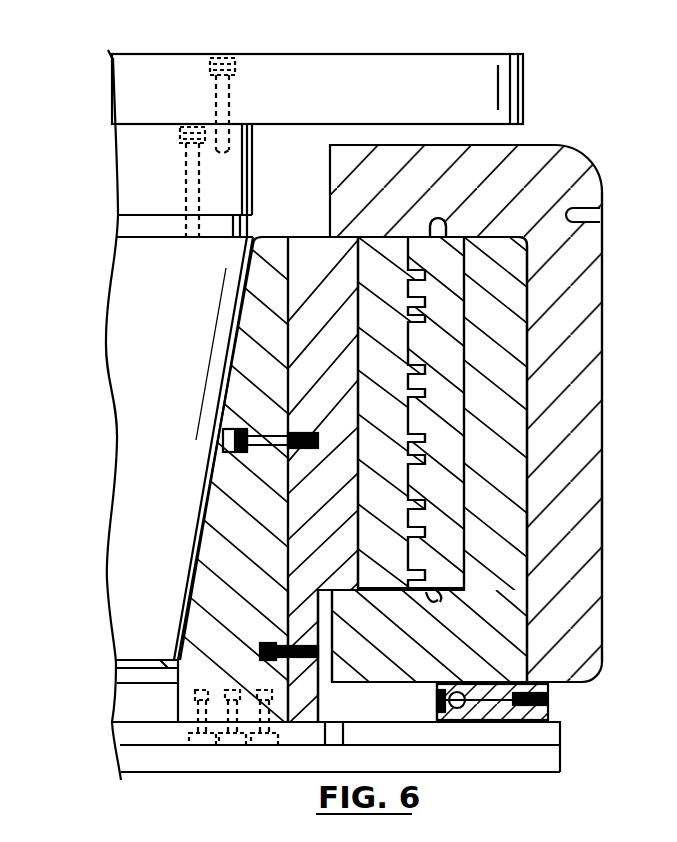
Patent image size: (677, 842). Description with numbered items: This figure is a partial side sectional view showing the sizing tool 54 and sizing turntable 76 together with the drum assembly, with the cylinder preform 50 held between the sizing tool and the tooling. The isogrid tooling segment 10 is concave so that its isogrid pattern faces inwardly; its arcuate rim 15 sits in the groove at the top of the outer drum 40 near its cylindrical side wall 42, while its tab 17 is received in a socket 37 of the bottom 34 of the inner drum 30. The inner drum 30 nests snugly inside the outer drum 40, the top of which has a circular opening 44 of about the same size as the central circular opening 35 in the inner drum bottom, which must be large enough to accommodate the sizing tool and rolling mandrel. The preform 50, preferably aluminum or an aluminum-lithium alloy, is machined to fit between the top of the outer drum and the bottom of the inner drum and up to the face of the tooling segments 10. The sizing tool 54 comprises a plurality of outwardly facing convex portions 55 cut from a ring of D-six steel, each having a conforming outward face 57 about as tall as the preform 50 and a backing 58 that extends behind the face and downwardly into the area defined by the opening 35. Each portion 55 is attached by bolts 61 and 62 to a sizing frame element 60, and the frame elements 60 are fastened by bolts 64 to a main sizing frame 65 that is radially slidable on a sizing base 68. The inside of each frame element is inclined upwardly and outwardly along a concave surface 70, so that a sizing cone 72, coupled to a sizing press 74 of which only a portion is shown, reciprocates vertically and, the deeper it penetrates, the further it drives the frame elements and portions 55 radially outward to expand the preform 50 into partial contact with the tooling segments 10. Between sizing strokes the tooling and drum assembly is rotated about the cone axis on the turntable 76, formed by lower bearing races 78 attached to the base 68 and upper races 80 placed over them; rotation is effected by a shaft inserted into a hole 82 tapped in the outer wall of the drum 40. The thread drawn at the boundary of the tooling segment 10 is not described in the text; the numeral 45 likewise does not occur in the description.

The isogrid tooling segment 10 is at (458, 356).
The arcuate rim 15 is at (447, 225).
The tab 17 is at (441, 600).
The inner drum 30 is at (516, 526).
The bottom 34 is at (464, 390).
The central circular opening 35 is at (328, 680).
The socket 37 is at (428, 606).
The outer drum 40 is at (597, 437).
The cylindrical side wall 42 is at (524, 470).
The circular opening 44 is at (341, 160).
The lip edge 45 is at (448, 227).
The cylinder preform 50 is at (372, 329).
The sizing tool 54 is at (328, 232).
The convex portion 55 is at (296, 272).
The outward face 57 is at (365, 356).
The backing 58 is at (300, 603).
The sizing frame element 60 is at (258, 572).
The bolt 61 is at (243, 452).
The bolt 62 is at (275, 643).
The bolt 64 is at (186, 740).
The main sizing frame 65 is at (125, 702).
The sizing base 68 is at (562, 731).
The concave surface 70 is at (206, 497).
The sizing cone 72 is at (188, 314).
The sizing press 74 is at (376, 62).
The sizing turntable 76 is at (560, 701).
The lower bearing race 78 is at (480, 722).
The upper race 80 is at (490, 690).
The hole 82 is at (600, 216).